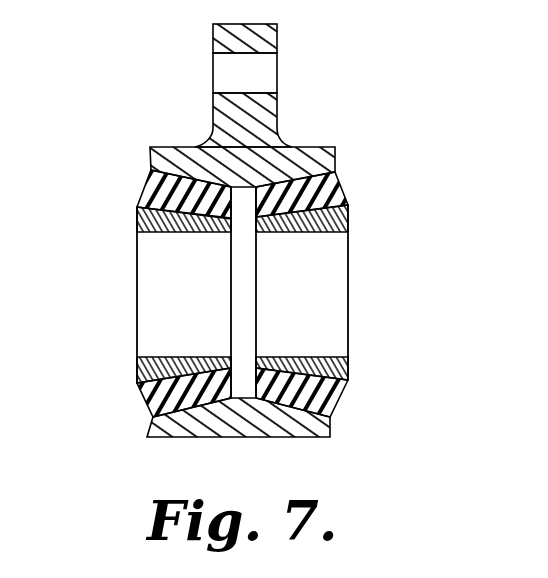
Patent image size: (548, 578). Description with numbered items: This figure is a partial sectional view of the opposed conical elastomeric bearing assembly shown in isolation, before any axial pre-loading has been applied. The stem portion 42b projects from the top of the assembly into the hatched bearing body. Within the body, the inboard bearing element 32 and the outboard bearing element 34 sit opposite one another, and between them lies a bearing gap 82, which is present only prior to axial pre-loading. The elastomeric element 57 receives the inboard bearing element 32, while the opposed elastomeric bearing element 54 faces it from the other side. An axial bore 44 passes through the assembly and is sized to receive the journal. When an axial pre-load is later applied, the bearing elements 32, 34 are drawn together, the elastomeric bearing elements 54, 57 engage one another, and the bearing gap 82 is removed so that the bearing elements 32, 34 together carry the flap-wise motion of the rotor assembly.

The shaft stem 42b is at (212, 126).
The elastomeric element 57 is at (150, 189).
The elastomeric bearing element 54 is at (339, 187).
The inboard bearing element 32 is at (140, 216).
The outboard bearing element 34 is at (350, 215).
The axial bore 44 is at (180, 285).
The bearing gap 82 is at (242, 312).